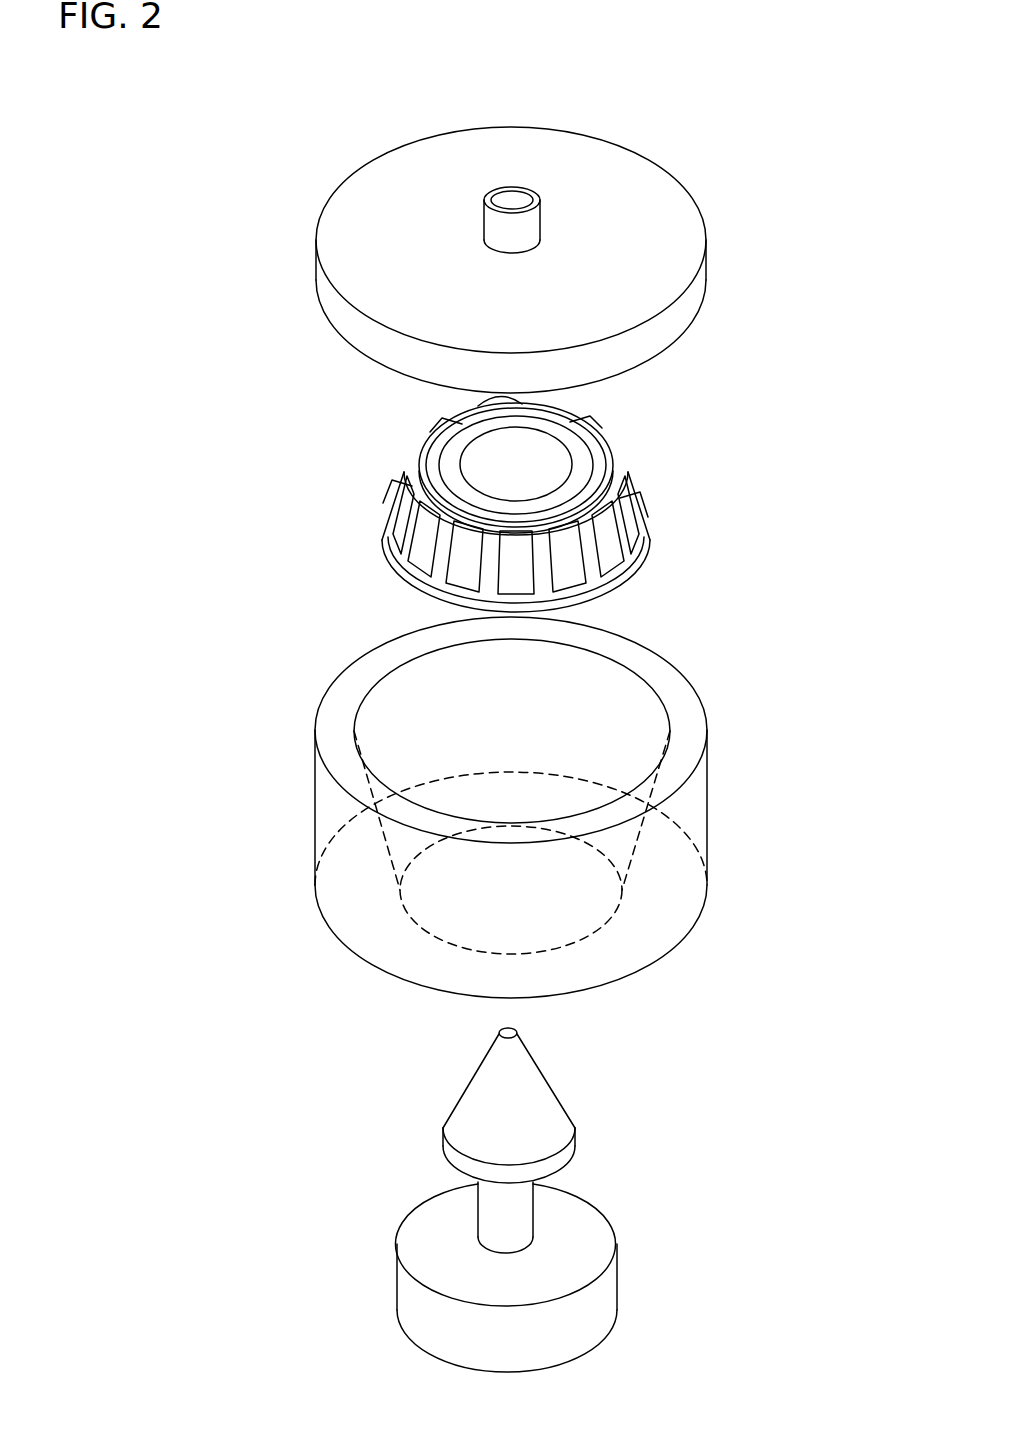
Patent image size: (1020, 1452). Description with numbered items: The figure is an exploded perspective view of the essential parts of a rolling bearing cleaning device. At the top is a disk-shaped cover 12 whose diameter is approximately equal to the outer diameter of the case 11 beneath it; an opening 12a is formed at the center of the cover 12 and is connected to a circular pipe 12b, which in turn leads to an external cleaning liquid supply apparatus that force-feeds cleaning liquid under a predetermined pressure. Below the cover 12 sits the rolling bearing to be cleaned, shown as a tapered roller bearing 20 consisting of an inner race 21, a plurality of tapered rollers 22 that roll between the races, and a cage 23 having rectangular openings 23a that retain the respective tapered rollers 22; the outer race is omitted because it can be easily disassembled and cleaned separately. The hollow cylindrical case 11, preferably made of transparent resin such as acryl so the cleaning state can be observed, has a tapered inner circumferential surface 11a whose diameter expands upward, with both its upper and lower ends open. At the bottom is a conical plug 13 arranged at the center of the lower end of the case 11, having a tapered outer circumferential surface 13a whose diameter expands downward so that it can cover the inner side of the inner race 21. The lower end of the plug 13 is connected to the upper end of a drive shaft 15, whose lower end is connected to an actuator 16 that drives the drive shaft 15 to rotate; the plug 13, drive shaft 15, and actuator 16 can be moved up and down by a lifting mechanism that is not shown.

The case 11 is at (505, 807).
The tapered inner circumferential surface 11a is at (625, 725).
The cover 12 is at (479, 238).
The opening 12a is at (483, 238).
The circular pipe 12b is at (545, 198).
The plug 13 is at (492, 1105).
The tapered outer circumferential surface 13a is at (520, 1112).
The drive shaft 15 is at (520, 1213).
The actuator 16 is at (618, 1292).
The tapered roller bearing 20 is at (526, 500).
The inner race 21 is at (455, 452).
The tapered rollers 22 is at (623, 540).
The cage 23 is at (392, 525).
The rectangular openings 23a is at (598, 560).